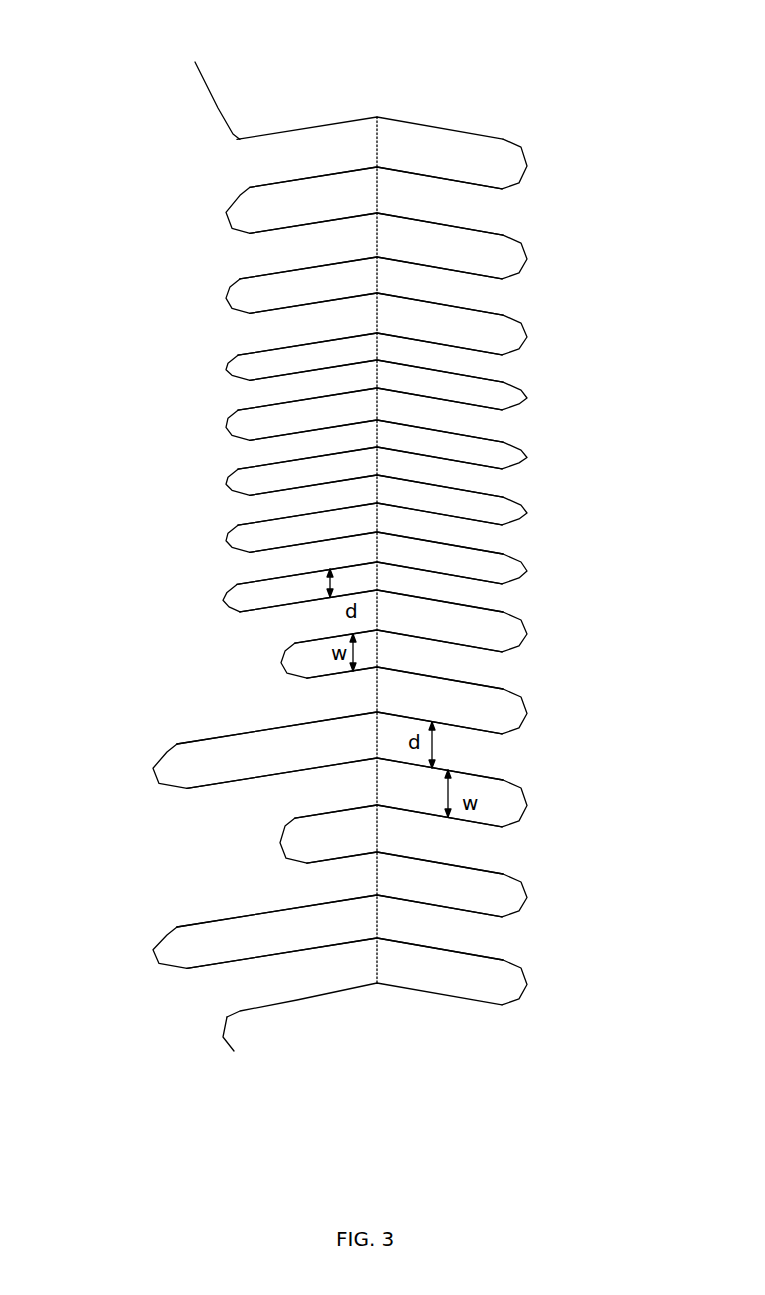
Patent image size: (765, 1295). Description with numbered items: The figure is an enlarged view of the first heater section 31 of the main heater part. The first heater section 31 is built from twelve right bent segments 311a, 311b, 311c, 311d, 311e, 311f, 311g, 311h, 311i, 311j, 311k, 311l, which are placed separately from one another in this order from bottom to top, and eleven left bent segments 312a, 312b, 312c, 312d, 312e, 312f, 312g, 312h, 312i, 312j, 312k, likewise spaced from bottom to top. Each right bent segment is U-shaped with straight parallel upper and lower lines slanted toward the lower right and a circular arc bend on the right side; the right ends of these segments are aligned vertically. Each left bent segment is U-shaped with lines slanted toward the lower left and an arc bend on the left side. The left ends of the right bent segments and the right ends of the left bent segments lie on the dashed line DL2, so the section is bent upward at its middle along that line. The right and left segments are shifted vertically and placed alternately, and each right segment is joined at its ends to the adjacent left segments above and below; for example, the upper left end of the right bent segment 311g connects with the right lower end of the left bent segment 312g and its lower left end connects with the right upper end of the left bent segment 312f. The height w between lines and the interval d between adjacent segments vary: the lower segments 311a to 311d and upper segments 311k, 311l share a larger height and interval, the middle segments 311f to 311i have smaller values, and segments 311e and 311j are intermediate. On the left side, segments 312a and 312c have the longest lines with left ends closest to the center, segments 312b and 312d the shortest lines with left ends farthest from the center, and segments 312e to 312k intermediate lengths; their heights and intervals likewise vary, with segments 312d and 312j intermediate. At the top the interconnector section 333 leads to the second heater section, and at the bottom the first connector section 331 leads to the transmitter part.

The first heater section 31 is at (345, 559).
The right bent segment 311a is at (503, 960).
The right bent segment 311b is at (503, 874).
The right bent segment 311c is at (503, 780).
The right bent segment 311d is at (503, 689).
The right bent segment 311e is at (503, 612).
The right bent segment 311f is at (503, 554).
The right bent segment 311g is at (503, 497).
The right bent segment 311h is at (503, 442).
The right bent segment 311i is at (503, 382).
The right bent segment 311j is at (503, 315).
The right bent segment 311k is at (503, 235).
The right bent segment 311l is at (503, 139).
The left bent segment 312a is at (177, 927).
The left bent segment 312b is at (295, 818).
The left bent segment 312c is at (177, 744).
The left bent segment 312d is at (295, 643).
The left bent segment 312e is at (237, 584).
The left bent segment 312f is at (238, 525).
The left bent segment 312g is at (238, 469).
The left bent segment 312h is at (238, 410).
The left bent segment 312i is at (238, 355).
The left bent segment 312j is at (240, 279).
The left bent segment 312k is at (250, 187).
The first connector section 331 is at (297, 1000).
The interconnector section 333 is at (219, 108).
The dashed line DL2 is at (377, 535).